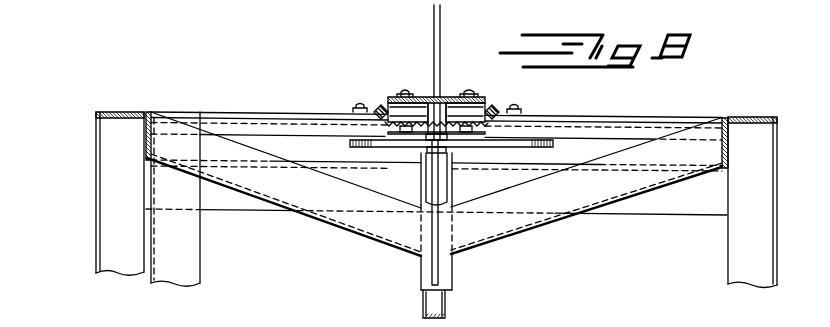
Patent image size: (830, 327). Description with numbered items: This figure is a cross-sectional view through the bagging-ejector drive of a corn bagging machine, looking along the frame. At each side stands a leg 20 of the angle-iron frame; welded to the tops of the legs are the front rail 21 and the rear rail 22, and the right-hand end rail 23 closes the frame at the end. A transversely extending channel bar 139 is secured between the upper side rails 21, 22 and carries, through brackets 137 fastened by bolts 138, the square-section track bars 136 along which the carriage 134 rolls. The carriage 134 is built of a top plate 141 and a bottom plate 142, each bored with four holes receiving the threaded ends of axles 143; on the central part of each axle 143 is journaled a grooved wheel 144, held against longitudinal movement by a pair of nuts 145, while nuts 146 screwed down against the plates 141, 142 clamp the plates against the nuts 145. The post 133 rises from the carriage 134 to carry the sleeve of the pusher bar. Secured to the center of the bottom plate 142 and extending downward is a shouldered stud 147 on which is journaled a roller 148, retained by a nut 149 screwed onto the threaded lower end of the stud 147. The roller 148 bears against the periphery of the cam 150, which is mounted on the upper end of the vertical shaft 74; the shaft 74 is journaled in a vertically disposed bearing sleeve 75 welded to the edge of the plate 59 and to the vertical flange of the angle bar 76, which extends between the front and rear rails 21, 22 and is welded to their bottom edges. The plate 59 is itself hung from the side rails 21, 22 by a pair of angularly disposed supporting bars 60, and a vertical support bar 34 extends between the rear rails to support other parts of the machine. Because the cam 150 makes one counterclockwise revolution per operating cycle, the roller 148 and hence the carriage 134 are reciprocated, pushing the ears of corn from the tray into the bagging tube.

The leg 20 is at (104, 206).
The front rail 21 is at (139, 108).
The rear rail 22 is at (760, 116).
The right-hand end rail 23 is at (622, 117).
The vertical support bar 34 is at (196, 251).
The plate 59 is at (440, 270).
The supporting bar 60 is at (355, 222).
The vertical shaft 74 is at (446, 300).
The bearing sleeve 75 is at (420, 269).
The angle bar 76 is at (651, 210).
The post 133 is at (441, 27).
The carriage 134 is at (486, 96).
The bar 136 is at (494, 122).
The bracket 137 is at (354, 112).
The bolt 138 is at (519, 110).
The channel bar 139 is at (274, 125).
The top plate 141 is at (388, 99).
The bottom plate 142 is at (398, 129).
The axle 143 is at (406, 89).
The grooved wheel 144 is at (470, 89).
The nut 145 is at (497, 105).
The nut 146 is at (398, 93).
The shouldered stud 147 is at (426, 141).
The roller 148 is at (447, 150).
The nut 149 is at (424, 168).
The cam 150 is at (554, 143).